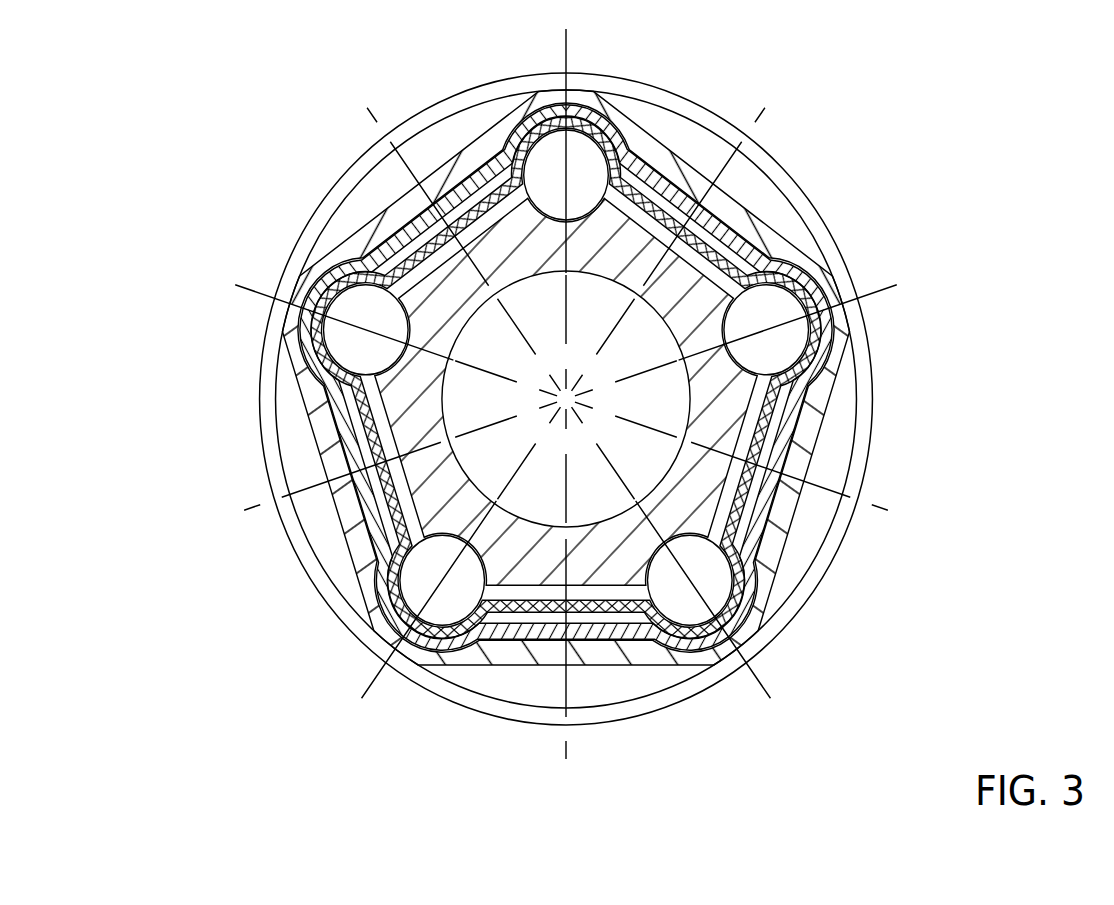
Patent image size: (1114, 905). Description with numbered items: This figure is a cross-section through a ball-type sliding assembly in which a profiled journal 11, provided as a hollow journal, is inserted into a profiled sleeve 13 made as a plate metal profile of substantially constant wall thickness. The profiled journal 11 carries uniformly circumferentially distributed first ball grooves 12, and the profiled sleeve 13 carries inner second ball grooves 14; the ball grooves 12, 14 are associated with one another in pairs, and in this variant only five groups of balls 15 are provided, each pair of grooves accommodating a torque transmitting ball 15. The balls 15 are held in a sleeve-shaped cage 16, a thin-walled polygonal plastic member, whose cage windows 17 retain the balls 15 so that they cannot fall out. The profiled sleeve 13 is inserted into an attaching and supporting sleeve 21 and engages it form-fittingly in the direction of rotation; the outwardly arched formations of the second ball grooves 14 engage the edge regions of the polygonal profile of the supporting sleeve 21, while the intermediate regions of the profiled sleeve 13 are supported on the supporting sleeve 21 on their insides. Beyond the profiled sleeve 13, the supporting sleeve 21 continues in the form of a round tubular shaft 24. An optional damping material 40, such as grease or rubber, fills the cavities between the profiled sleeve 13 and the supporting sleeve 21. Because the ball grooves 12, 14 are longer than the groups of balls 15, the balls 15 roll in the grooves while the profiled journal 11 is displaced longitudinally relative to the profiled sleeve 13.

The profiled journal 11 is at (380, 503).
The first ball grooves 12 is at (415, 568).
The profiled sleeve 13 is at (805, 572).
The second ball grooves 14 is at (787, 627).
The torque transmitting ball 15 is at (335, 334).
The cage 16 is at (340, 442).
The cage windows 17 is at (315, 380).
The supporting sleeve 21 is at (822, 395).
The tubular shaft 24 is at (860, 463).
The damping material 40 is at (813, 380).